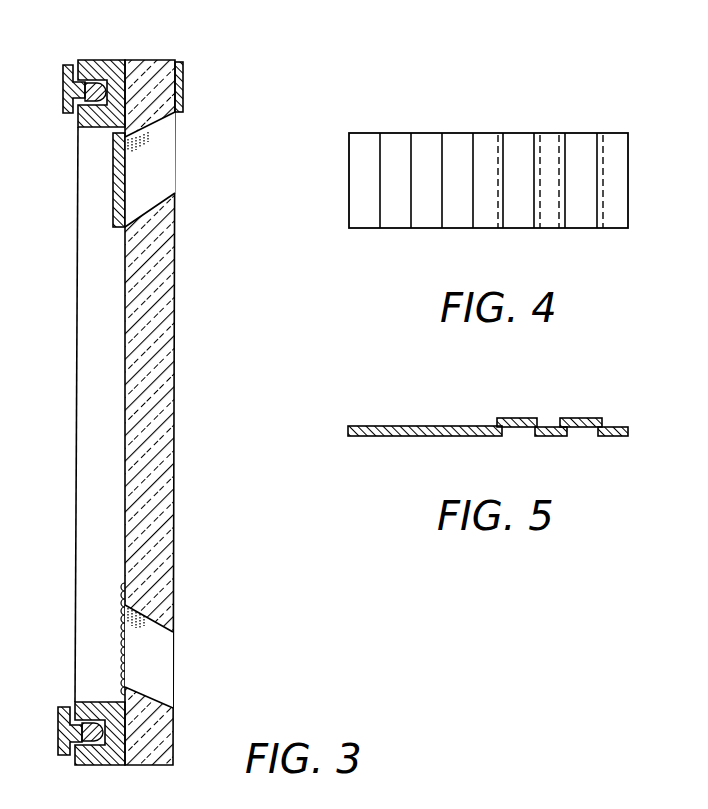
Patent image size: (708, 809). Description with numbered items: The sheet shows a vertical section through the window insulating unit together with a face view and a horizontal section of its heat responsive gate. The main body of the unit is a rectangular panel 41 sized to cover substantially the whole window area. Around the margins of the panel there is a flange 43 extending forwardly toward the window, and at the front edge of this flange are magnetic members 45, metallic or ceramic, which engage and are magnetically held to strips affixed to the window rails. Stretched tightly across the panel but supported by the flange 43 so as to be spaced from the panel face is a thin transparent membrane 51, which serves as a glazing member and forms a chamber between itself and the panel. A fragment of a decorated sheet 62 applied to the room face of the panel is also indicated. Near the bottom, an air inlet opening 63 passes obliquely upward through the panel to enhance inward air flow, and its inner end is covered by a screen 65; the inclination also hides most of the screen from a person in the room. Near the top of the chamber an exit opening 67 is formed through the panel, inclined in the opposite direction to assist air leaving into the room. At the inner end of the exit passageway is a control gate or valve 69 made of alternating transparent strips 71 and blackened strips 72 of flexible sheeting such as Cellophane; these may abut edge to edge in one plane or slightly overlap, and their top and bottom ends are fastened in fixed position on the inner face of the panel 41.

In FIG. 3, the rectangular panel 41 is at (170, 364).
In FIG. 3, the flange 43 is at (90, 127).
In FIG. 3, the magnetic members 45 is at (63, 108).
In FIG. 3, the transparent membrane 51 is at (77, 405).
In FIG. 3, the decorated sheet 62 is at (185, 73).
In FIG. 3, the air inlet opening 63 is at (170, 668).
In FIG. 3, the screen 65 is at (120, 584).
In FIG. 3, the exit opening 67 is at (172, 137).
In FIG. 3, the control gate or valve 69 is at (110, 227).
In FIG. 4, the control gate or valve 69 is at (538, 124).
In FIG. 5, the control gate or valve 69 is at (375, 443).
In FIG. 4, the transparent strips 71 is at (619, 222).
In FIG. 5, the transparent strips 71 is at (619, 418).
In FIG. 4, the blackened strips 72 is at (458, 222).
In FIG. 5, the blackened strips 72 is at (579, 437).